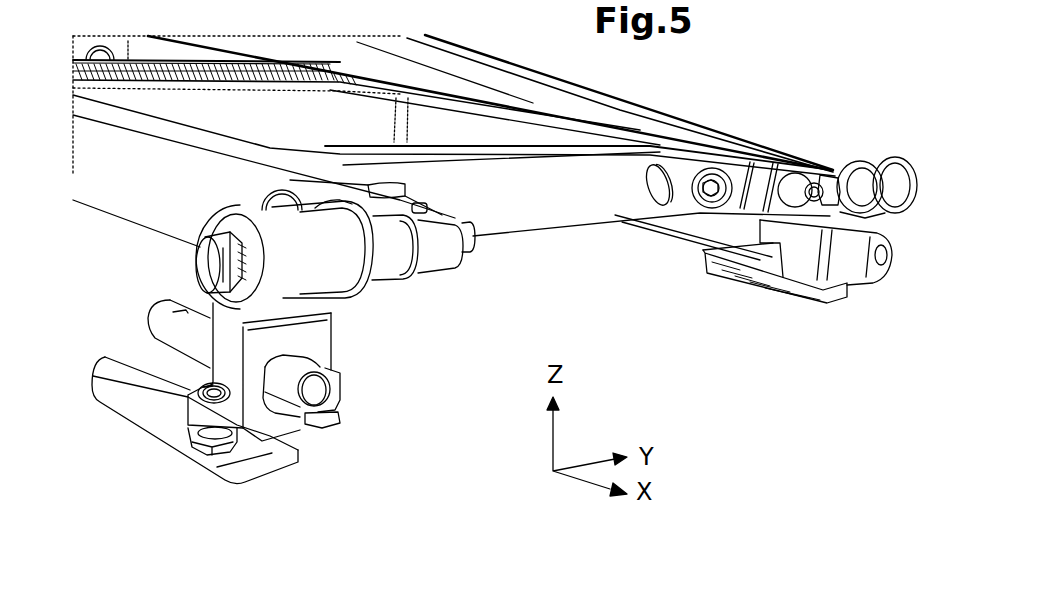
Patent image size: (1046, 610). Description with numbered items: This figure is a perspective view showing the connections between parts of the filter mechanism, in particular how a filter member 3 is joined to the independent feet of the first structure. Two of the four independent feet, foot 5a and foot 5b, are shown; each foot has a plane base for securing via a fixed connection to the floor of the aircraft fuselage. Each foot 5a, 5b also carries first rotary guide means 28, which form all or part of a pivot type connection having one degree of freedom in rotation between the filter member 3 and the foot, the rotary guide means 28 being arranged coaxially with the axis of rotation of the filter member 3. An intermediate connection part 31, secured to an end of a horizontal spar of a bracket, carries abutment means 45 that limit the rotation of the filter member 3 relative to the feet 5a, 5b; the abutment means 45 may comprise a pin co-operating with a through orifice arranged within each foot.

The filter member 3 is at (535, 185).
The first rotary guide means 28 is at (897, 160).
The abutment means 45 is at (328, 388).
The foot 5a is at (777, 316).
The foot 5b is at (290, 462).
The intermediate connection part 31 is at (883, 275).